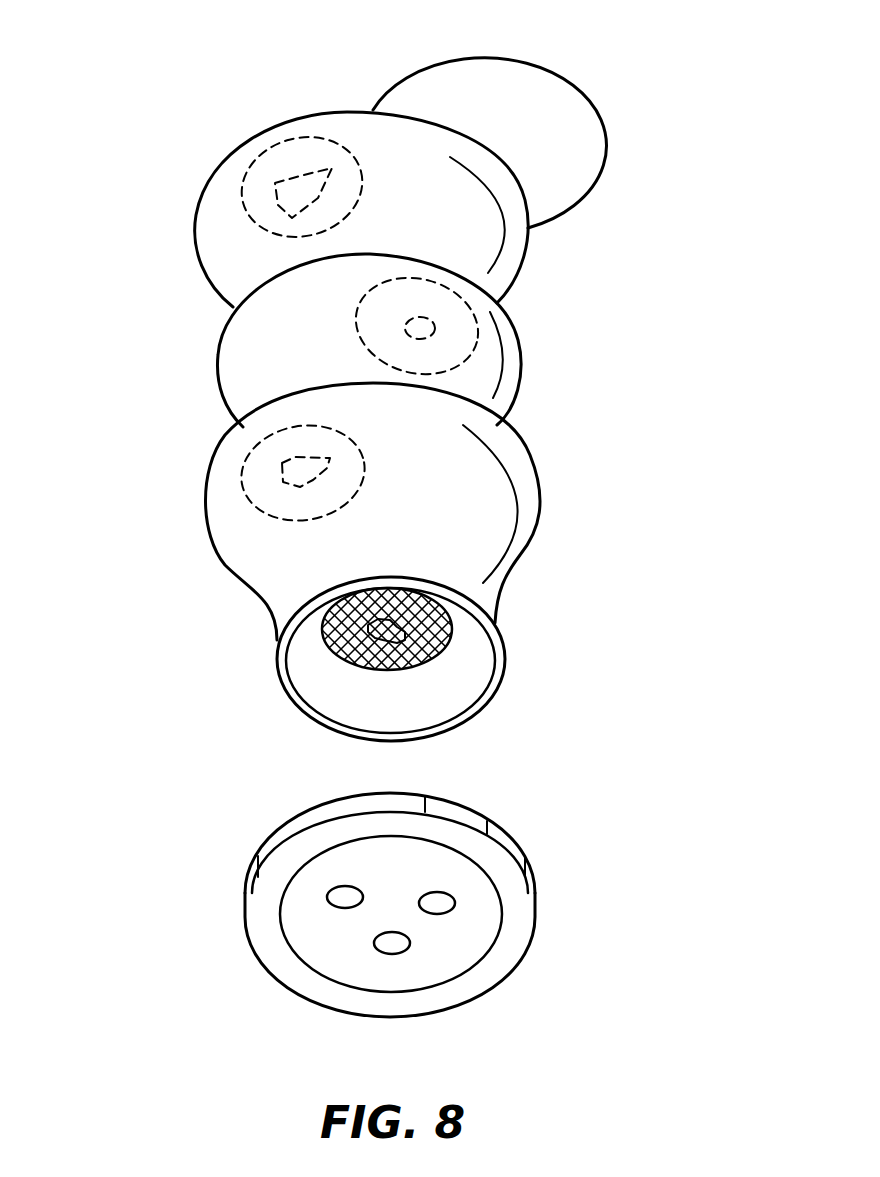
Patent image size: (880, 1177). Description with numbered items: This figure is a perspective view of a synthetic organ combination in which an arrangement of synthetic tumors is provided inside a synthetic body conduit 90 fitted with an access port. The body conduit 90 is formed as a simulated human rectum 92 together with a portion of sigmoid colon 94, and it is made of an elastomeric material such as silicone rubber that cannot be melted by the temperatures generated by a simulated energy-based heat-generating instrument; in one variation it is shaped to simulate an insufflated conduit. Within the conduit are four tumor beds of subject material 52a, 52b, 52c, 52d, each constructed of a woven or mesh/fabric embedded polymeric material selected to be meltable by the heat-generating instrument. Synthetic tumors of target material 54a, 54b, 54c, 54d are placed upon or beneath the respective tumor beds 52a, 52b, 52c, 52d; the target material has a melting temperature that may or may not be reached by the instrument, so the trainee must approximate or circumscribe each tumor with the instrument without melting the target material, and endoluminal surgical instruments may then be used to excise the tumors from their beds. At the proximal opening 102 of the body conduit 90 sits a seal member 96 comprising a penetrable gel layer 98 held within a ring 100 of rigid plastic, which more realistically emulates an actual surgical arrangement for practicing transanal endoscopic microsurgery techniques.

The synthetic body conduit 90 is at (370, 349).
The simulated human rectum 92 is at (284, 661).
The portion of sigmoid colon 94 is at (232, 440).
The seal member 96 is at (443, 930).
The penetrable gel layer 98 is at (343, 960).
The ring 100 is at (537, 897).
The proximal opening 102 is at (297, 705).
The tumor bed of subject material 52a is at (505, 629).
The tumor bed of subject material 52b is at (187, 476).
The tumor bed of subject material 52c is at (531, 294).
The tumor bed of subject material 52d is at (202, 130).
The synthetic tumor of target material 54a is at (405, 632).
The synthetic tumor of target material 54b is at (281, 480).
The synthetic tumor of target material 54c is at (432, 325).
The synthetic tumor of target material 54d is at (273, 198).